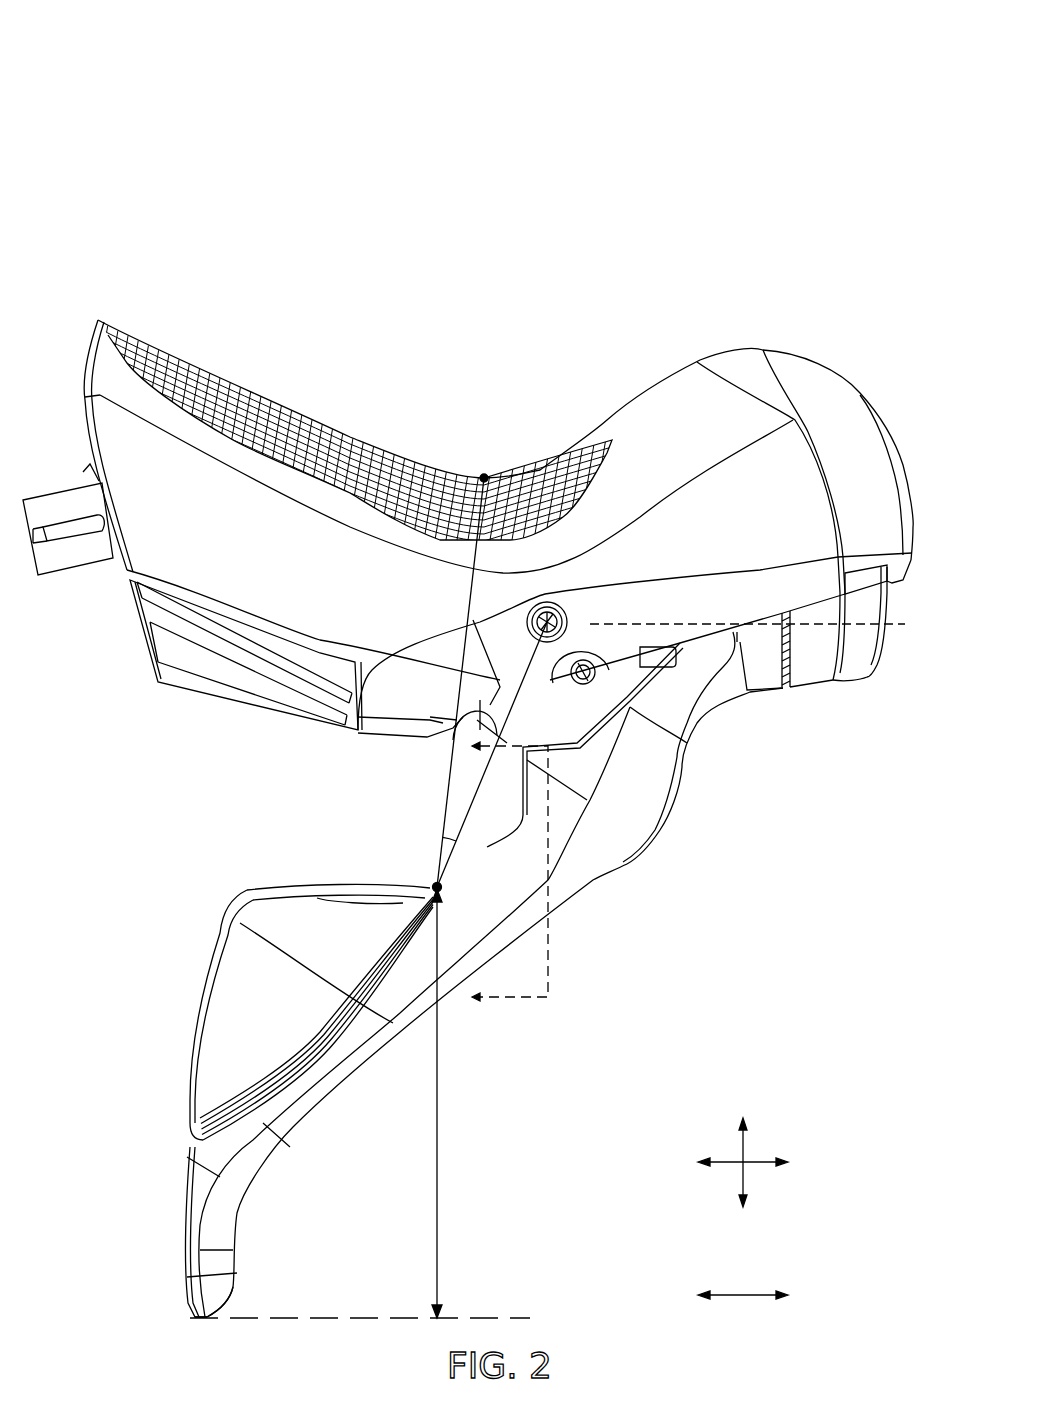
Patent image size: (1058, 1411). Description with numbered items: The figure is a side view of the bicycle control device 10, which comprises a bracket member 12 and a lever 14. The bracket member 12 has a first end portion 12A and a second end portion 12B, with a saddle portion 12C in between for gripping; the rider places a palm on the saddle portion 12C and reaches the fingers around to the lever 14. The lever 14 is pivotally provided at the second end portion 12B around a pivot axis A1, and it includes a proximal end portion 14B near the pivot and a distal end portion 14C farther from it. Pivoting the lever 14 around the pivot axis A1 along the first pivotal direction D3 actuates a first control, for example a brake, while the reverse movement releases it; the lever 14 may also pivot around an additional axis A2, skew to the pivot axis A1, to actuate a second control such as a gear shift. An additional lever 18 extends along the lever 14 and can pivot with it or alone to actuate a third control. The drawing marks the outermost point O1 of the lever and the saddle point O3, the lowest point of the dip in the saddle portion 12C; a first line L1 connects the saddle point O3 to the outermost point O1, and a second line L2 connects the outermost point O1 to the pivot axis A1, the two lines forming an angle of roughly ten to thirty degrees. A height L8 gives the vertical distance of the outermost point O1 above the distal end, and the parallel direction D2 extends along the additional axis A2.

The bicycle control device 10 is at (103, 118).
The bracket member 12 is at (740, 350).
The first end portion 12A is at (70, 308).
The second end portion 12B is at (868, 352).
The saddle portion 12C is at (450, 410).
The lever 14 is at (590, 895).
The proximal end portion 14B is at (755, 750).
The distal end portion 14C is at (285, 1255).
The additional lever 18 is at (245, 893).
The pivot axis A1 is at (562, 612).
The additional axis A2 is at (760, 625).
The outermost point O1 is at (437, 887).
The saddle point O3 is at (484, 478).
The first line L1 is at (453, 748).
The second line L2 is at (471, 806).
The height L8 is at (440, 1138).
The parallel direction D2 is at (743, 1282).
The first pivotal direction D3 is at (150, 960).